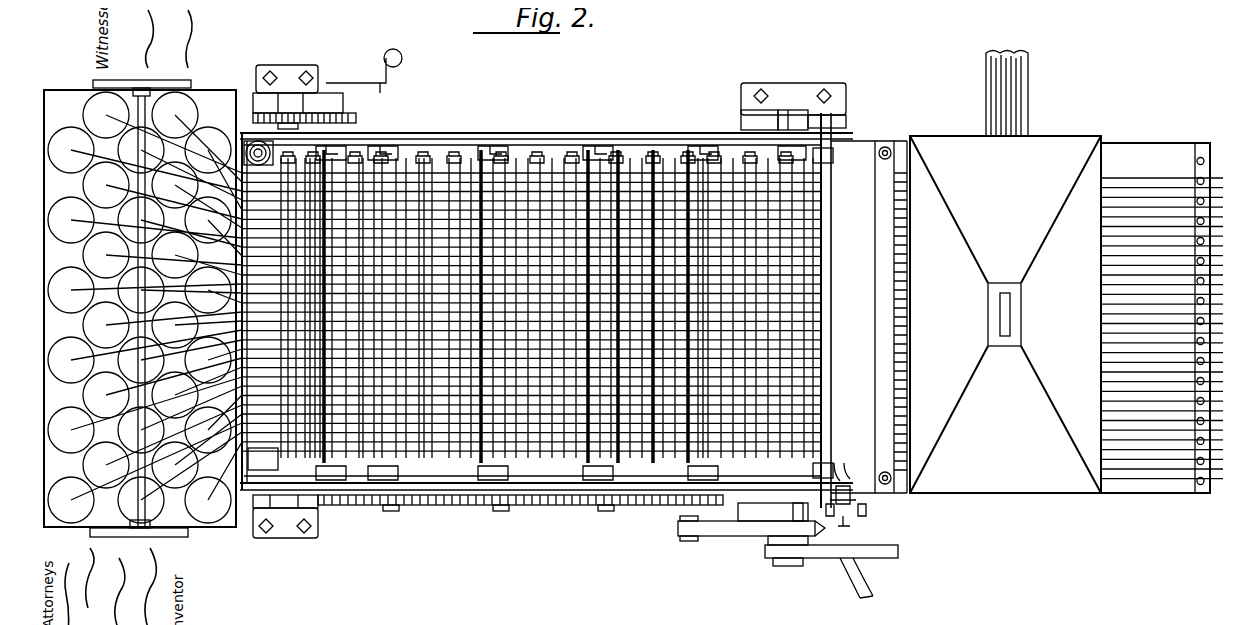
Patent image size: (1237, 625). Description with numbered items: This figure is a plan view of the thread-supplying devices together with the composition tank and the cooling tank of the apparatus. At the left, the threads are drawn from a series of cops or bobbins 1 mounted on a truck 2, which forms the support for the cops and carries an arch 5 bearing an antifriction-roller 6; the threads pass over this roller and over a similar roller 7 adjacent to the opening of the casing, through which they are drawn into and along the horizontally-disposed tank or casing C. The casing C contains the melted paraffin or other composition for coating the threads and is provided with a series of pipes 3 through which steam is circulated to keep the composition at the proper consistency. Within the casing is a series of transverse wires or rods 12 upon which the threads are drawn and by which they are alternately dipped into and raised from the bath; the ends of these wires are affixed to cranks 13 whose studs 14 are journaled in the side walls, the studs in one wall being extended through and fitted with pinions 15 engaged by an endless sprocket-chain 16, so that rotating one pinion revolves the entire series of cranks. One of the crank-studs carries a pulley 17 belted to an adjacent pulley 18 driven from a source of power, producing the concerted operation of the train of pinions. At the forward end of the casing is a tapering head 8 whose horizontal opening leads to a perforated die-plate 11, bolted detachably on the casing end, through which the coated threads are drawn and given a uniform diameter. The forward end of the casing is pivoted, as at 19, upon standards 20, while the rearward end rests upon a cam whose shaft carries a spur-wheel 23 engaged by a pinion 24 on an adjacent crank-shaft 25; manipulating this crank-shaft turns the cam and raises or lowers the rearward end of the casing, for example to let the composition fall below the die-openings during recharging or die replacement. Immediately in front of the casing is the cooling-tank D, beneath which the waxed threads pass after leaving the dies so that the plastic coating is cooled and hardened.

The cops or bobbins 1 is at (75, 103).
The truck 2 is at (48, 82).
The pipes 3 is at (610, 152).
The arch 5 is at (166, 74).
The antifriction-roller 6 is at (128, 135).
The roller 7 is at (231, 295).
The tapering head 8 is at (843, 138).
The perforated die-plate 11 is at (880, 138).
The transverse wires or rods 12 is at (473, 155).
The cranks 13 is at (595, 142).
The studs 14 is at (410, 500).
The pinions 15 is at (496, 498).
The endless sprocket-chain 16 is at (498, 524).
The pulley 17 is at (683, 530).
The pulley 18 is at (752, 545).
The pivot 19 is at (786, 102).
The standards 20 is at (740, 106).
The spur-wheel 23 is at (248, 100).
The pinion 24 is at (350, 112).
The crank-shaft 25 is at (340, 100).
The tank or casing C is at (546, 296).
The cooling-tank D is at (1005, 272).